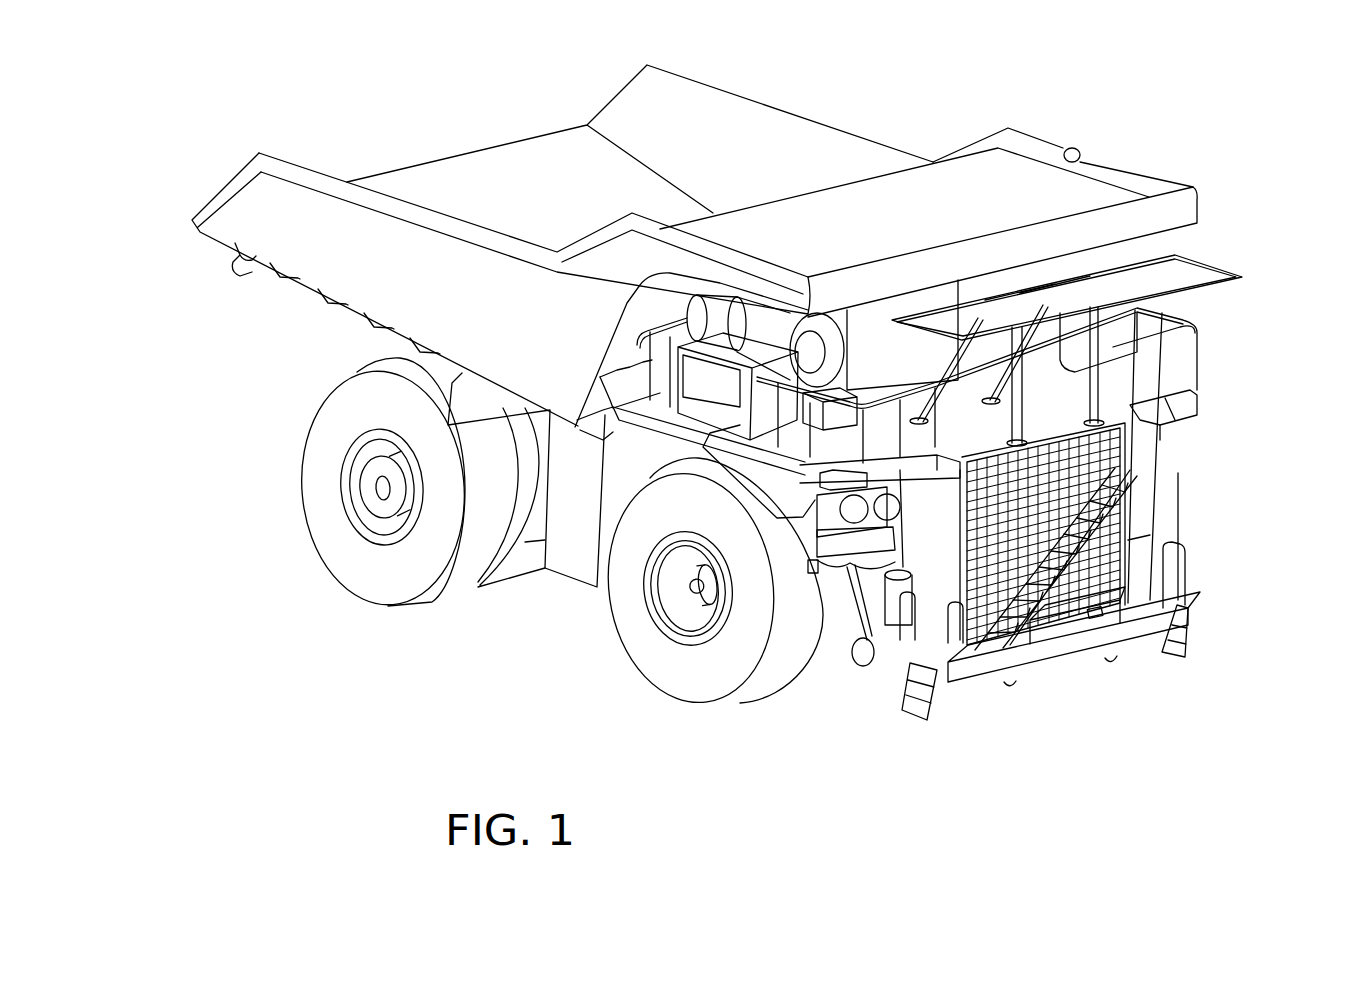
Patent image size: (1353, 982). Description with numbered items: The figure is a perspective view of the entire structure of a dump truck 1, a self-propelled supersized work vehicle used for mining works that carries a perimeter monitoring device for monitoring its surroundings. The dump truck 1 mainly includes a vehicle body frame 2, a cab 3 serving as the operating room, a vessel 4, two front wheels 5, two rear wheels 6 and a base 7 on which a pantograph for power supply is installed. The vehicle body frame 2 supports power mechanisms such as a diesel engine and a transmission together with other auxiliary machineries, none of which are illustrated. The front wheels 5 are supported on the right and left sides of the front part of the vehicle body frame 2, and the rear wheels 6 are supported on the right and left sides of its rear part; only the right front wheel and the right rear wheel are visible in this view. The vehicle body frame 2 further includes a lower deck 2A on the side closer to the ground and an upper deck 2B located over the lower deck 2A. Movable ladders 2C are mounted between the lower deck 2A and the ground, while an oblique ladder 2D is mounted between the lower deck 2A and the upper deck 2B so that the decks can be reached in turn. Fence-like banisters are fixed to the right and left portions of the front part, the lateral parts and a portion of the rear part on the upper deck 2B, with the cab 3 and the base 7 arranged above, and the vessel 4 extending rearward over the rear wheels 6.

The dump truck 1 is at (964, 104).
The vehicle body frame 2 is at (845, 612).
The lower deck 2A is at (1120, 633).
The upper deck 2B is at (1197, 402).
The movable ladders 2C is at (930, 708).
The oblique ladder 2D is at (1040, 637).
The cab 3 is at (1117, 327).
The vessel 4 is at (478, 170).
The front wheels 5 is at (693, 687).
The rear wheels 6 is at (383, 590).
The base 7 is at (1212, 258).